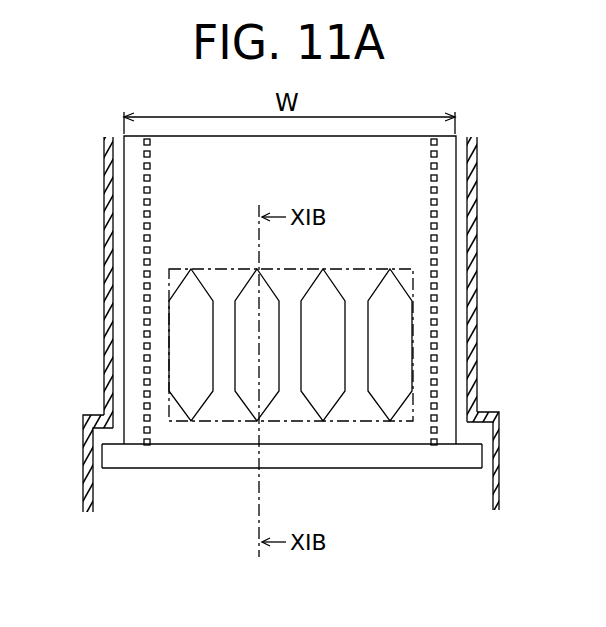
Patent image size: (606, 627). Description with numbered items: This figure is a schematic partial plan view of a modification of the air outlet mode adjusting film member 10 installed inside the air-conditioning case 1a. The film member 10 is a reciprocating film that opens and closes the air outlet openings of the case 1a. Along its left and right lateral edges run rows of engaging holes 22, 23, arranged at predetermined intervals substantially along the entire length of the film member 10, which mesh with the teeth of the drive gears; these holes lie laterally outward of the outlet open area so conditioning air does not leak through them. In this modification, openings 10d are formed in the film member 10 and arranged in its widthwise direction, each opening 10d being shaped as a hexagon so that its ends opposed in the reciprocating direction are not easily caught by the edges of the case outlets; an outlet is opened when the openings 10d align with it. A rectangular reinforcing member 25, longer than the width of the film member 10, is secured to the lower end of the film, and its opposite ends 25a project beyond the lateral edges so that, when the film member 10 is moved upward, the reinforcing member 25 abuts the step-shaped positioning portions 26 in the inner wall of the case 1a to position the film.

The air-conditioning case 1a is at (472, 300).
The positioning portion 26 is at (100, 413).
The air outlet mode adjusting film member 10 is at (205, 207).
The engaging hole 22 is at (147, 190).
The engaging hole 23 is at (434, 185).
The opening 10d is at (392, 348).
The reinforcing member 25 is at (200, 470).
The opposite end 25a is at (113, 470).